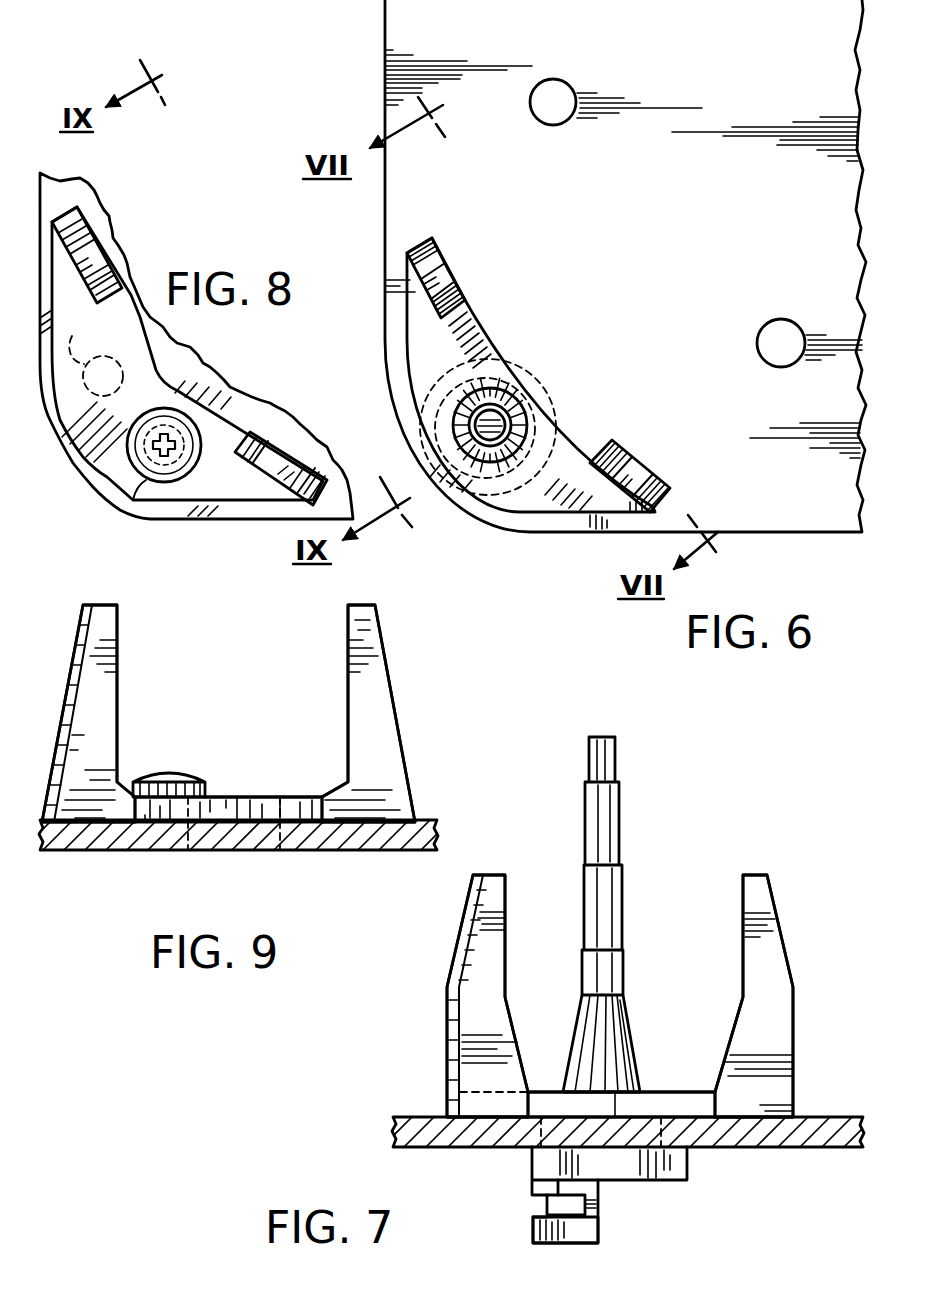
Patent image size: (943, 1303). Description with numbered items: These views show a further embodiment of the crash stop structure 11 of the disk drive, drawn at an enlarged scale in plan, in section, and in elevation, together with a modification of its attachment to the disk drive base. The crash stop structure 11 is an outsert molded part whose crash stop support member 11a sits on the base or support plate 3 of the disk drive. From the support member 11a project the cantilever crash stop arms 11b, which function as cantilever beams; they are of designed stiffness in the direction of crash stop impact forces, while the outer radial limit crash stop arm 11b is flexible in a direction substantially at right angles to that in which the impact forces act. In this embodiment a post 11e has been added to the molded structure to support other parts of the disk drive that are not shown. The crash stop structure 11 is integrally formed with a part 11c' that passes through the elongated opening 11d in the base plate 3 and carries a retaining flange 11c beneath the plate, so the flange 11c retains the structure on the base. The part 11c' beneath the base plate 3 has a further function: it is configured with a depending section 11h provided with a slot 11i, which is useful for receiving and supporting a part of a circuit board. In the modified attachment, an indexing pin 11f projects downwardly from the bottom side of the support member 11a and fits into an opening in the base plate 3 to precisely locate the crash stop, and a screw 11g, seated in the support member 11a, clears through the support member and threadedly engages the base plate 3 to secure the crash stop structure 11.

In FIG. 6, the base plate 3 is at (625, 534).
In FIG. 8, the base plate 3 is at (103, 205).
In FIG. 9, the base plate 3 is at (112, 851).
In FIG. 7, the base plate 3 is at (841, 1116).
In FIG. 6, the crash stop structure 11 is at (493, 309).
In FIG. 8, the crash stop structure 11 is at (232, 388).
In FIG. 9, the crash stop structure 11 is at (245, 696).
In FIG. 7, the crash stop structure 11 is at (693, 977).
In FIG. 6, the crash stop support member 11a is at (498, 346).
In FIG. 8, the crash stop support member 11a is at (237, 424).
In FIG. 9, the crash stop support member 11a is at (260, 797).
In FIG. 7, the crash stop support member 11a is at (662, 1092).
In FIG. 6, the cantilever crash stop arms 11b is at (458, 294).
In FIG. 8, the cantilever crash stop arms 11b is at (100, 257).
In FIG. 9, the cantilever crash stop arms 11b is at (108, 626).
In FIG. 7, the cantilever crash stop arms 11b is at (492, 950).
In FIG. 6, the retaining flange 11c is at (488, 470).
In FIG. 7, the retaining flange 11c is at (630, 1187).
In FIG. 7, the part beneath the base plate 11c' is at (650, 1223).
In FIG. 6, the elongated opening 11d is at (470, 495).
In FIG. 7, the elongated opening 11d is at (526, 1127).
In FIG. 6, the post 11e is at (509, 416).
In FIG. 7, the post 11e is at (620, 808).
In FIG. 8, the indexing pin 11f is at (84, 334).
In FIG. 9, the indexing pin 11f is at (283, 838).
In FIG. 8, the fixing screw 11g is at (133, 501).
In FIG. 9, the fixing screw 11g is at (176, 772).
In FIG. 7, the depending section 11h is at (532, 1232).
In FIG. 7, the slot 11i is at (553, 1203).